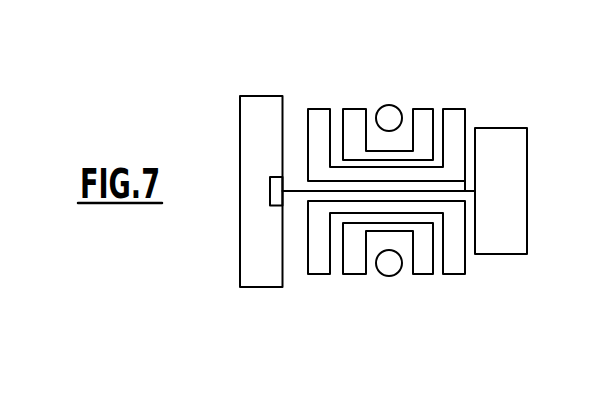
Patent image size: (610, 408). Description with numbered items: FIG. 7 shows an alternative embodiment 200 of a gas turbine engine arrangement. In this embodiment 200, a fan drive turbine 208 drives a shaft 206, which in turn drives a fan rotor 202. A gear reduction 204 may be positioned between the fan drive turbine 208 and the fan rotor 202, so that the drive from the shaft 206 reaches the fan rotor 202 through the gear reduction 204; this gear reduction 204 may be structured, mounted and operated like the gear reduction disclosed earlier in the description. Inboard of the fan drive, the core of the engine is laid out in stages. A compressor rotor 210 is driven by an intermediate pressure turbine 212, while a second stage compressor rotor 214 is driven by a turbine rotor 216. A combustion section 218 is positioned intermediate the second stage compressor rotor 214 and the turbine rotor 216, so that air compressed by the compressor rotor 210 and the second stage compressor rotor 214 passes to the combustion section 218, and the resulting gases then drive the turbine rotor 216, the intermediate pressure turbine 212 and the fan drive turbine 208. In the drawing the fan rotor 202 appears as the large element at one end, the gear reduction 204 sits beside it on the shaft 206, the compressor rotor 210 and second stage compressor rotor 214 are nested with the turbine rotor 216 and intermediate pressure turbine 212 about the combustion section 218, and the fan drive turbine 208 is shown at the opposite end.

The embodiment 200 is at (209, 74).
The fan rotor 202 is at (240, 138).
The gear reduction 204 is at (270, 203).
The shaft 206 is at (453, 190).
The fan drive turbine 208 is at (515, 173).
The compressor rotor 210 is at (318, 250).
The intermediate pressure turbine 212 is at (457, 205).
The second stage compressor rotor 214 is at (353, 115).
The turbine rotor 216 is at (423, 115).
The combustion section 218 is at (388, 106).